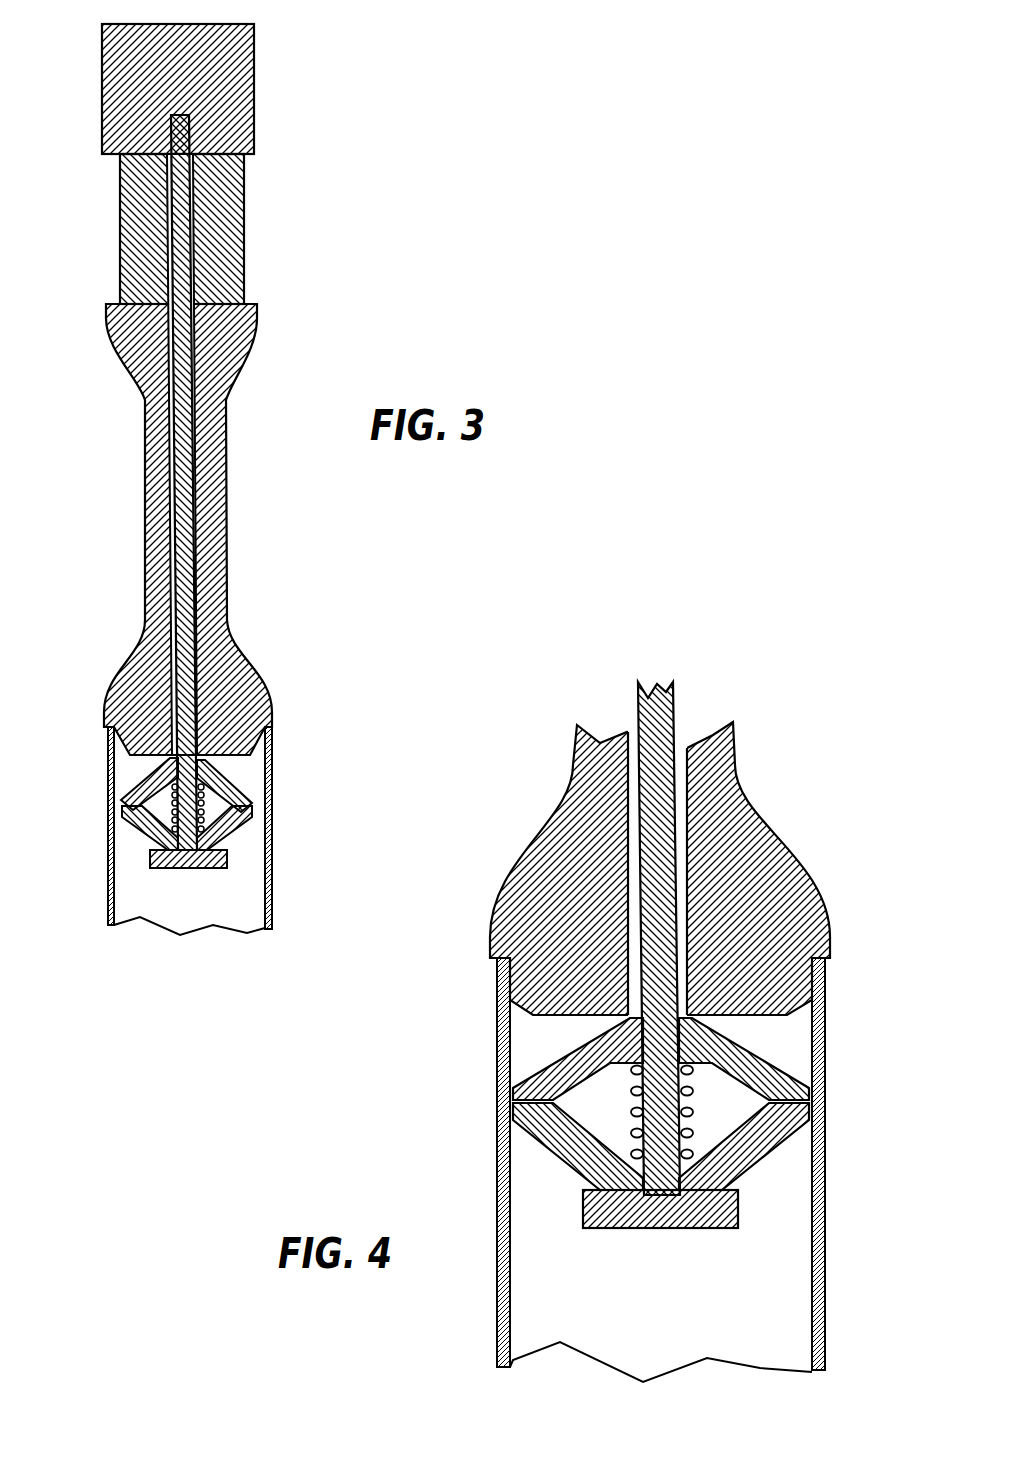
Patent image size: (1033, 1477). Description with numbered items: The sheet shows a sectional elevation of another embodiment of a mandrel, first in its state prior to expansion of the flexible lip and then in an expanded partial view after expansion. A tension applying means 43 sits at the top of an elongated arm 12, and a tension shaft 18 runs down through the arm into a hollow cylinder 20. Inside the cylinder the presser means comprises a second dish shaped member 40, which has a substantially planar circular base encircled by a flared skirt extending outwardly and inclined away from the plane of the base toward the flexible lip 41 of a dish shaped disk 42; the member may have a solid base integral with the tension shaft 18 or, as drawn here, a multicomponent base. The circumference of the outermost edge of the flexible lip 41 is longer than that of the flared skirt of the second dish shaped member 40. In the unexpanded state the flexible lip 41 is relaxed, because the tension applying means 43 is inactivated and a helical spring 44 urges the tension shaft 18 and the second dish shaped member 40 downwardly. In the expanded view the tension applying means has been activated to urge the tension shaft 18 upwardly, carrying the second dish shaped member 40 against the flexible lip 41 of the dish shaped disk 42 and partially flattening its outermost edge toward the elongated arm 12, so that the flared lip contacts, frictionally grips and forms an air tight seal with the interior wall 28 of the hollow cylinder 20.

In FIG. 3, the elongated arm 12 is at (212, 502).
In FIG. 3, the tension shaft 18 is at (196, 447).
In FIG. 4, the tension shaft 18 is at (673, 717).
In FIG. 3, the hollow cylinder 20 is at (272, 879).
In FIG. 3, the interior wall 28 is at (112, 905).
In FIG. 4, the interior wall 28 is at (510, 1256).
In FIG. 3, the second dish shaped member 40 is at (237, 823).
In FIG. 4, the second dish shaped member 40 is at (755, 1143).
In FIG. 3, the flexible lip 41 is at (272, 790).
In FIG. 4, the flexible lip 41 is at (813, 1070).
In FIG. 3, the dish shaped disk 42 is at (232, 785).
In FIG. 4, the dish shaped disk 42 is at (760, 1050).
In FIG. 3, the tension applying means 43 is at (258, 40).
In FIG. 3, the helical spring 44 is at (170, 817).
In FIG. 4, the helical spring 44 is at (635, 1105).